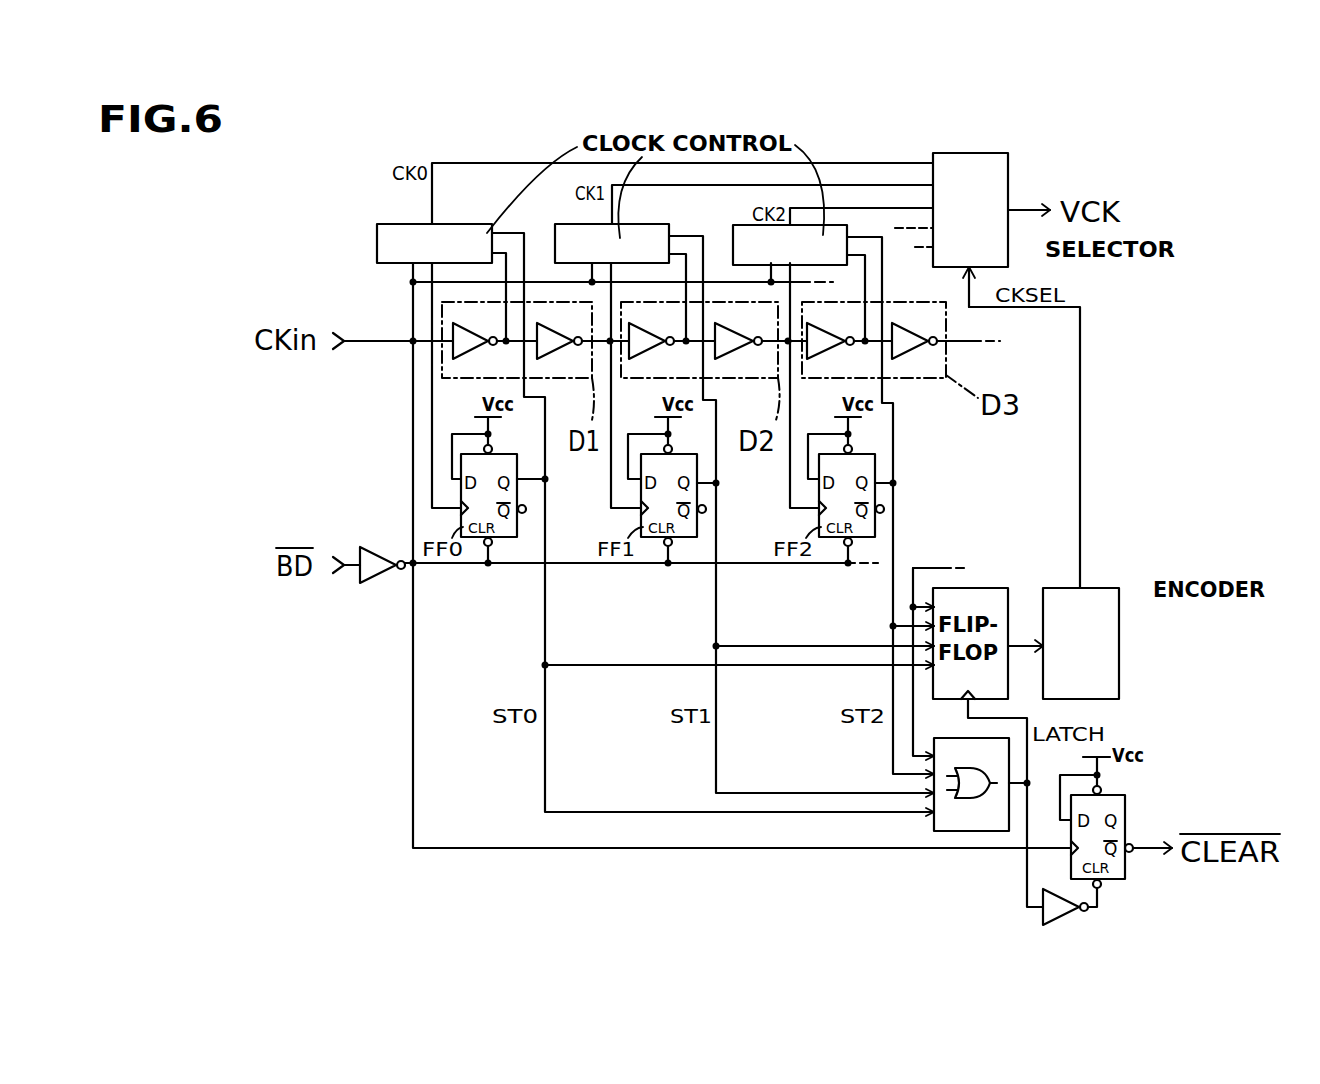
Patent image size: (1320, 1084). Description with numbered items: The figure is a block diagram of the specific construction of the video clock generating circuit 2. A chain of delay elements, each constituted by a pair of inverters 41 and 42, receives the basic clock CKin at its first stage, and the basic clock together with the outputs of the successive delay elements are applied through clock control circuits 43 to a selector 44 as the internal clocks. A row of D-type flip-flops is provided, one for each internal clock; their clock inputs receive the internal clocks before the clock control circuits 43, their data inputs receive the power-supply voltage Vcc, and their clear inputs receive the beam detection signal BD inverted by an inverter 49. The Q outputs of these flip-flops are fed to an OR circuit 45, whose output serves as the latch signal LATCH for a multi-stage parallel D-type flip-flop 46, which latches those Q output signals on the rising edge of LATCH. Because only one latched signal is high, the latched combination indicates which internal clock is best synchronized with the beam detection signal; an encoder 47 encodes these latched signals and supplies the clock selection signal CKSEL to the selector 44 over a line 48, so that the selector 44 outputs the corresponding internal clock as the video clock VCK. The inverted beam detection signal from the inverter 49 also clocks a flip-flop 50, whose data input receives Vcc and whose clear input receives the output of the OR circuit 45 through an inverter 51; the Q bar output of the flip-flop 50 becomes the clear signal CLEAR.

The video clock generating circuit 2 is at (326, 272).
The inverter 41 is at (462, 357).
The inverter 42 is at (551, 357).
The clock control circuit 43 is at (460, 223).
The selector 44 is at (1110, 630).
The OR circuit 45 is at (960, 822).
The D-type flip-flop 46 is at (992, 589).
The encoder 47 is at (1115, 678).
The line 48 is at (1080, 337).
The inverter 49 is at (373, 580).
The flip-flop 50 is at (1120, 802).
The inverter 51 is at (1062, 915).